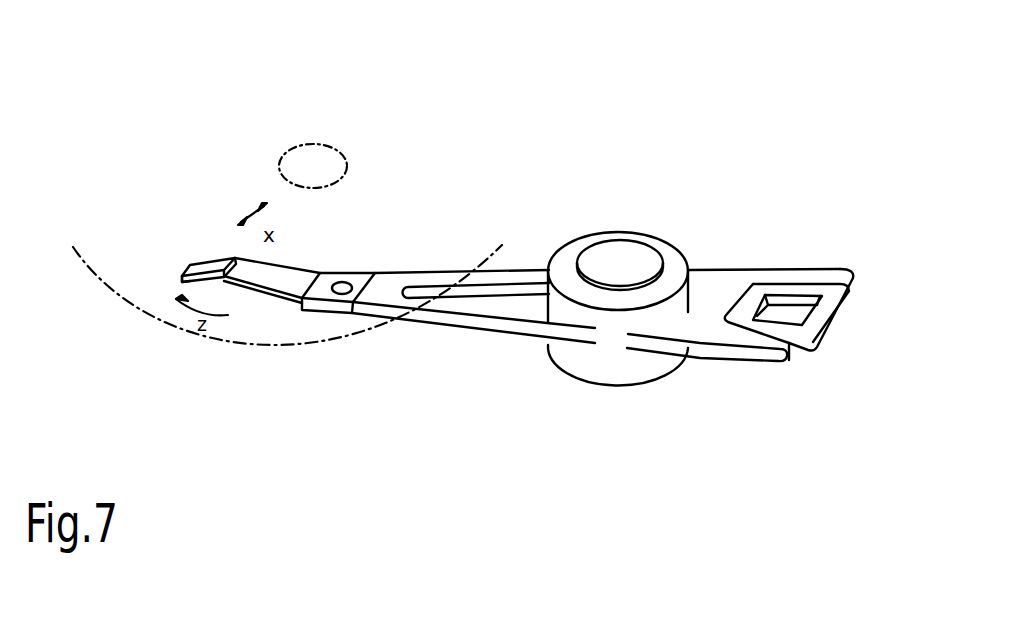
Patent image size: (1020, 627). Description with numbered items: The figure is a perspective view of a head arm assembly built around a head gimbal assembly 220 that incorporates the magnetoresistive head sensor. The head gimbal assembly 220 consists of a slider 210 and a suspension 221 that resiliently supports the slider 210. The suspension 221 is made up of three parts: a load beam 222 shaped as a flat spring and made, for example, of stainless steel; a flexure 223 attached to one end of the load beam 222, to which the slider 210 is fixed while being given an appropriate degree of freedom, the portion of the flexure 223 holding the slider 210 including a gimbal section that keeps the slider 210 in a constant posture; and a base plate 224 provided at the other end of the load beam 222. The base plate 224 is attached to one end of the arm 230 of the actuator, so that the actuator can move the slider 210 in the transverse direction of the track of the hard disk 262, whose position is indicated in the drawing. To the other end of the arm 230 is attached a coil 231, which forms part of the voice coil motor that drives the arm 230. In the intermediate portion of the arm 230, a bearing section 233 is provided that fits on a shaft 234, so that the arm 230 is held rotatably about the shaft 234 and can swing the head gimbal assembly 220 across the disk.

The slider 210 is at (212, 263).
The head gimbal assembly 220 is at (293, 313).
The suspension 221 is at (283, 248).
The load beam 222 is at (312, 275).
The flexure 223 is at (188, 268).
The base plate 224 is at (373, 270).
The arm 230 is at (437, 323).
The coil 231 is at (842, 332).
The bearing section 233 is at (557, 252).
The shaft 234 is at (628, 253).
The hard disk 262 is at (222, 338).